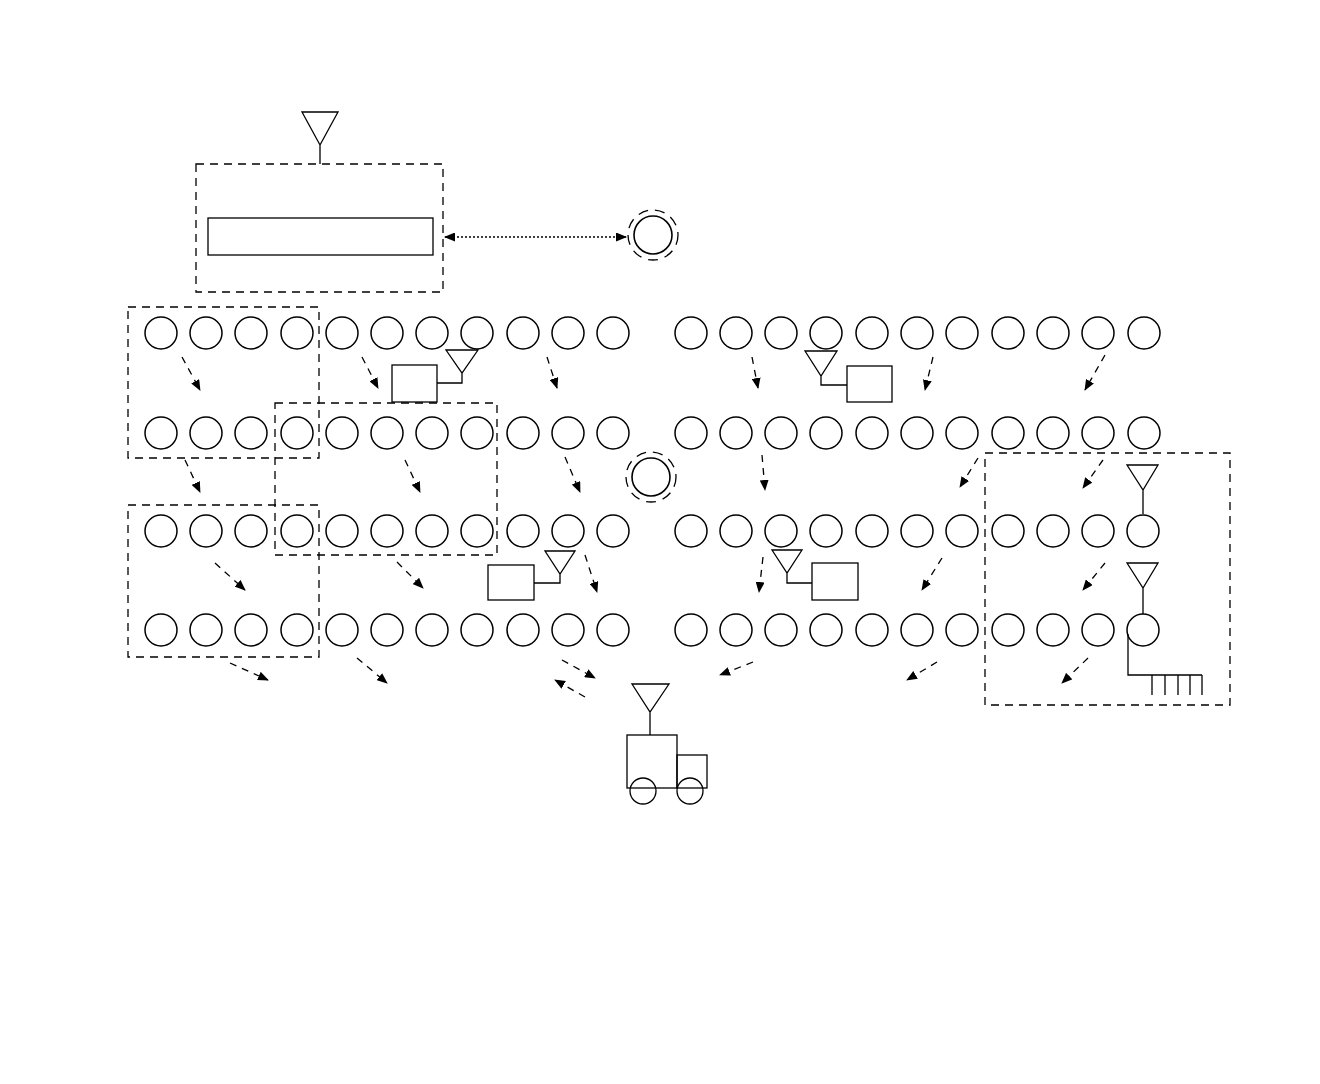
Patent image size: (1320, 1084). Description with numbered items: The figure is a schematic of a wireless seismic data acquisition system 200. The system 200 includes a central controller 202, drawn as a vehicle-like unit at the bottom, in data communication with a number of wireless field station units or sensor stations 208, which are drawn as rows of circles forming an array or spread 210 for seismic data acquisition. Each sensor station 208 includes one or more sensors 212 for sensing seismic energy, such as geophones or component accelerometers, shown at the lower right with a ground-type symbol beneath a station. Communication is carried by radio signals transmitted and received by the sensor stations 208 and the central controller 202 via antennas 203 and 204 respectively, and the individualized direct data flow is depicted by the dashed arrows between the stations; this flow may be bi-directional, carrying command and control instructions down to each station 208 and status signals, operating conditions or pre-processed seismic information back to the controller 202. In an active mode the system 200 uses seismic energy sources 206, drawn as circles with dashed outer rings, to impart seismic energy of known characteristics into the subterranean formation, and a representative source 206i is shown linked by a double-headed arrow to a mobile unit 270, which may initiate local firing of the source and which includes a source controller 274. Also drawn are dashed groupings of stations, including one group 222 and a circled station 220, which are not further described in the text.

The wireless seismic data acquisition system 200 is at (878, 752).
The central controller 202 is at (710, 772).
The antenna 203 is at (1152, 482).
The antenna 204 is at (333, 130).
The seismic energy source 206 is at (678, 480).
The representative seismic energy source 206i is at (658, 212).
The sensor station 208 is at (1140, 318).
The array 210 is at (968, 190).
The sensor 212 is at (1205, 686).
The node 220 is at (1150, 537).
The cluster 222 is at (1215, 453).
The mobile unit 270 is at (445, 172).
The source controller 274 is at (208, 237).